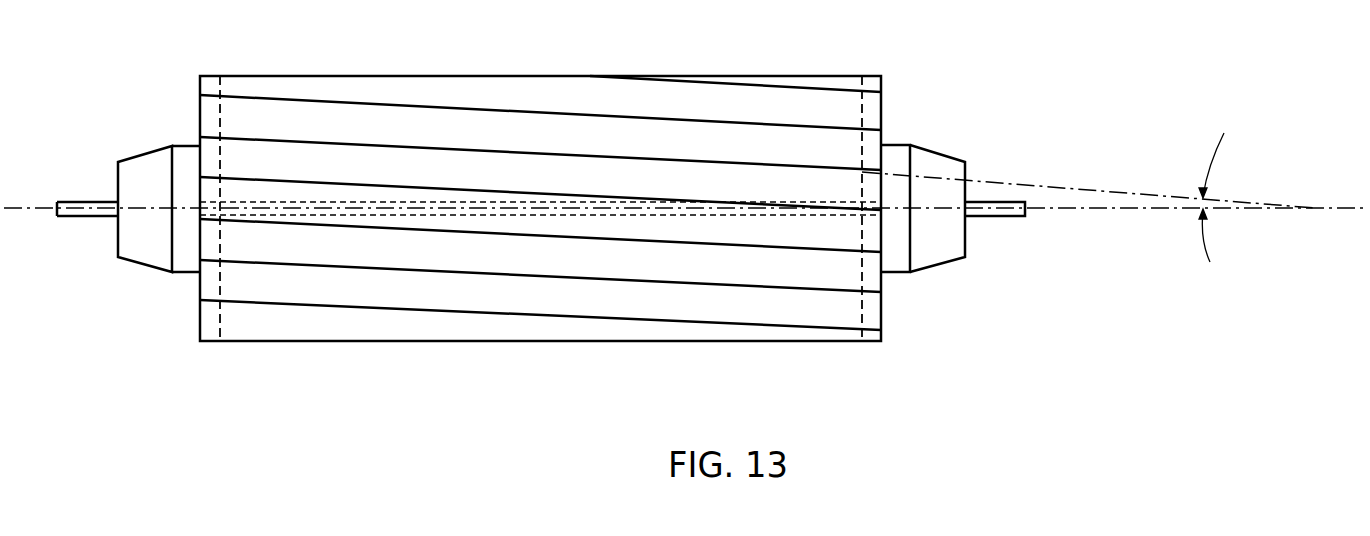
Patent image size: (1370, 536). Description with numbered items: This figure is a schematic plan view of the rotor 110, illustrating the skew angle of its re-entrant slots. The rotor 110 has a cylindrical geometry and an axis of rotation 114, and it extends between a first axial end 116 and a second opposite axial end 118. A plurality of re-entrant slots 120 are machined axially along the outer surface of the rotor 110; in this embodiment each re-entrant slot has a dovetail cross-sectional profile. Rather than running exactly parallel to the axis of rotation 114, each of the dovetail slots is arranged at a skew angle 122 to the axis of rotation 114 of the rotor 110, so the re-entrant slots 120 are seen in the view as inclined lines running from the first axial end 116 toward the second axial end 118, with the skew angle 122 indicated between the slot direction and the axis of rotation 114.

The rotor 110 is at (768, 76).
The axis of rotation 114 is at (1237, 204).
The first axial end 116 is at (198, 321).
The second opposite axial end 118 is at (883, 318).
The re-entrant slots 120 is at (605, 195).
The skew angle 122 is at (1208, 253).